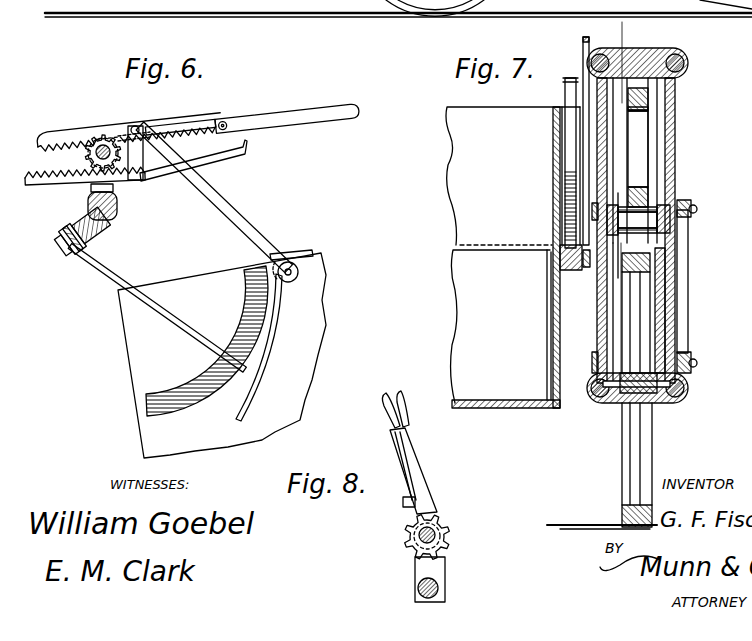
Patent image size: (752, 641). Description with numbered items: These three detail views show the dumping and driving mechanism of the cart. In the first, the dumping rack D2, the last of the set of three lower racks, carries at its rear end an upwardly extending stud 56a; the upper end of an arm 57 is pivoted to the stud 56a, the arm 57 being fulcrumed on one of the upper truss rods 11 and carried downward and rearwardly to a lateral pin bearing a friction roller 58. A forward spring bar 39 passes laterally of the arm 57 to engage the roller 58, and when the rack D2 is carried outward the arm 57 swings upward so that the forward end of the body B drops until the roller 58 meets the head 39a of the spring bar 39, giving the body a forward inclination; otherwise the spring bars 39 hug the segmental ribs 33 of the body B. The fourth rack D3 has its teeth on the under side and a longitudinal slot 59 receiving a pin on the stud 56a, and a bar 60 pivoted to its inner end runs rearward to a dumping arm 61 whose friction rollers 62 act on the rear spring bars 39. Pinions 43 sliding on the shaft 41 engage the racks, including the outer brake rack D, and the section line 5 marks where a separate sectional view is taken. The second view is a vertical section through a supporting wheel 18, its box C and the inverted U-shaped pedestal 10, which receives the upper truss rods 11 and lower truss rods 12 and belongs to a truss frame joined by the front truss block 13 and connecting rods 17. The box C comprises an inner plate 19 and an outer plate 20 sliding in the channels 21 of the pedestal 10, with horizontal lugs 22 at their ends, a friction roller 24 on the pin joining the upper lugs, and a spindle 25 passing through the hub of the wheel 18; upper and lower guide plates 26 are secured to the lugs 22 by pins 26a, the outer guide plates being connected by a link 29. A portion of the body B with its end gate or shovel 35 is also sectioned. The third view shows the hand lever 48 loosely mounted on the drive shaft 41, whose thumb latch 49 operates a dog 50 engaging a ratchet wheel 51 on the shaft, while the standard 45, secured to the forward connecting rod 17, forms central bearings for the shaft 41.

In FIG. 6, the upper rack D3 is at (133, 66).
In FIG. 6, the longitudinal slot 59 is at (174, 77).
In FIG. 6, the bar 60 is at (287, 114).
In FIG. 6, the pinion 43 is at (86, 154).
In FIG. 6, the shaft 41 is at (102, 153).
In FIG. 8, the shaft 41 is at (447, 531).
In FIG. 6, the upper truss rods 11 is at (203, 160).
In FIG. 7, the upper truss rods 11 is at (633, 53).
In FIG. 6, the section line 5 is at (180, 166).
In FIG. 7, the section line 5 is at (650, 24).
In FIG. 6, the stud 56a is at (139, 180).
In FIG. 6, the arm 57 is at (241, 225).
In FIG. 6, the dumping rack D2 is at (85, 183).
In FIG. 6, the connecting rods 17 is at (89, 203).
In FIG. 8, the connecting rods 17 is at (440, 590).
In FIG. 6, the front truss block 13 is at (95, 236).
In FIG. 6, the lower truss rods 12 is at (143, 288).
In FIG. 7, the lower truss rods 12 is at (594, 399).
In FIG. 6, the segmental ribs 33 is at (205, 341).
In FIG. 7, the segmental ribs 33 is at (554, 207).
In FIG. 6, the head 39a is at (290, 257).
In FIG. 7, the head 39a is at (572, 64).
In FIG. 6, the friction roller 58 is at (295, 283).
In FIG. 6, the spring bar 39 is at (264, 331).
In FIG. 7, the spring bar 39 is at (566, 140).
In FIG. 6, the body B is at (296, 401).
In FIG. 7, the body B is at (506, 242).
In FIG. 7, the dumping arm 61 is at (591, 47).
In FIG. 7, the slide-ways 21 is at (678, 128).
In FIG. 7, the outer rack D is at (639, 150).
In FIG. 7, the pedestal 10 is at (678, 173).
In FIG. 7, the guide plates 26 is at (609, 197).
In FIG. 7, the lugs 22 is at (661, 203).
In FIG. 7, the friction roller 24 is at (638, 235).
In FIG. 7, the pin 26a is at (697, 221).
In FIG. 7, the friction rollers 62 is at (549, 268).
In FIG. 7, the link 29 is at (691, 254).
In FIG. 7, the outer box plate 20 is at (608, 284).
In FIG. 7, the inner box plate 19 is at (670, 302).
In FIG. 7, the box C is at (600, 327).
In FIG. 7, the end gate 35 is at (513, 257).
In FIG. 7, the spindle 25 is at (656, 401).
In FIG. 7, the supporting wheel 18 is at (652, 471).
In FIG. 8, the thumb latch 49 is at (397, 449).
In FIG. 8, the hand lever 48 is at (419, 459).
In FIG. 8, the dog 50 is at (406, 511).
In FIG. 8, the ratchet wheel 51 is at (450, 545).
In FIG. 8, the standard 45 is at (415, 574).